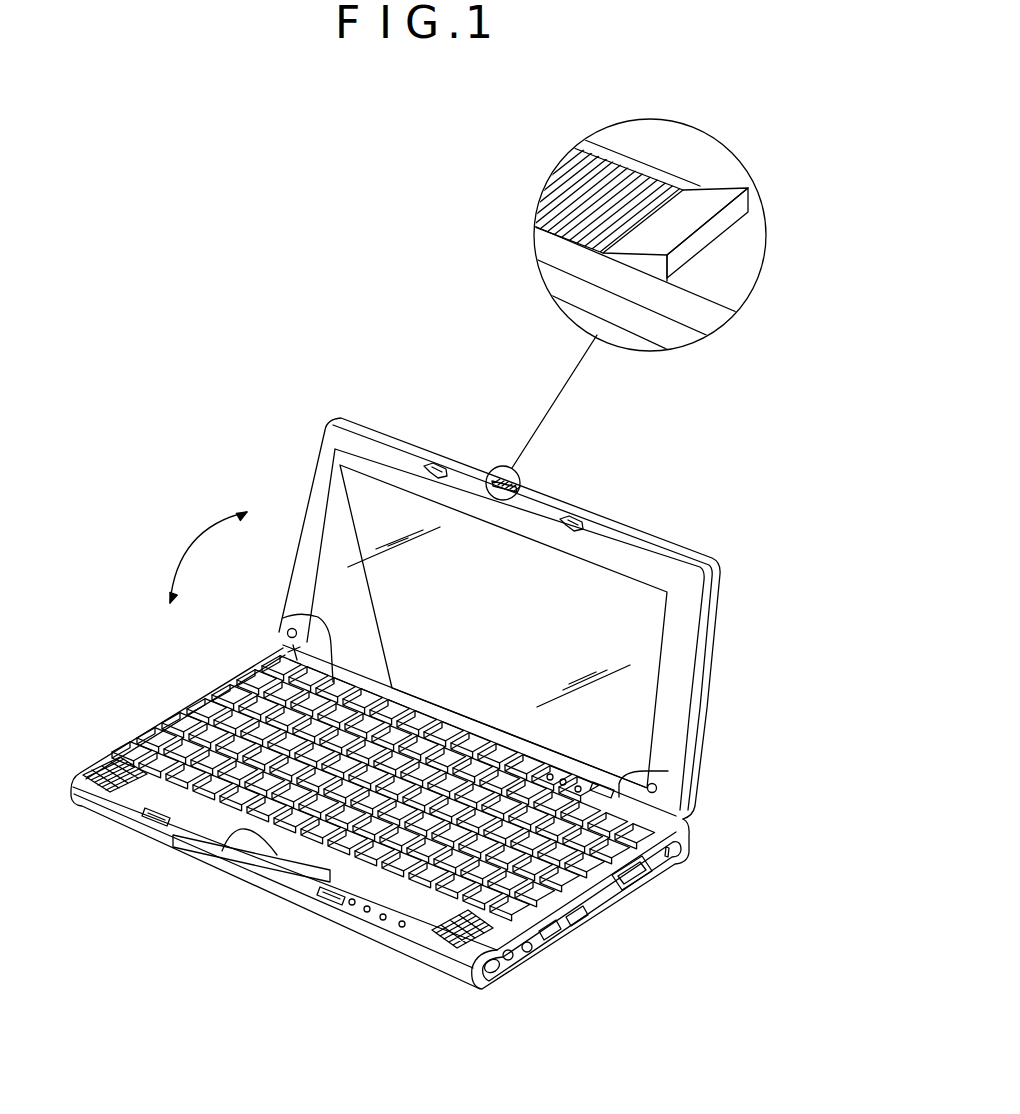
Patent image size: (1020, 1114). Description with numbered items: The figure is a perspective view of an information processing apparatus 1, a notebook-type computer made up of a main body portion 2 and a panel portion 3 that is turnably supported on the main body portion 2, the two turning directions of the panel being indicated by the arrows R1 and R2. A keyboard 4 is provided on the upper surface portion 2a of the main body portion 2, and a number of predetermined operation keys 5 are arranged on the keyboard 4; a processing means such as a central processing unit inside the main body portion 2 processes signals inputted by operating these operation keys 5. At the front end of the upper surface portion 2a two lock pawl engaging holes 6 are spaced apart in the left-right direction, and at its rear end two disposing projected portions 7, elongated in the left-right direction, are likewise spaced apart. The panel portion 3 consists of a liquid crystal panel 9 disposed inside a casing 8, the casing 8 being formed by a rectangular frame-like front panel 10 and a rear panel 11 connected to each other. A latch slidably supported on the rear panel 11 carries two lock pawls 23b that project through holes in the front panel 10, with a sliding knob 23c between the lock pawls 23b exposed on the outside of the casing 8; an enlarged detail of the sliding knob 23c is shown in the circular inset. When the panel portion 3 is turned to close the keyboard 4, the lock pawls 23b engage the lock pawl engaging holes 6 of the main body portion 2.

The information processing apparatus 1 is at (612, 443).
The main body portion 2 is at (450, 951).
The upper surface portion 2a is at (404, 903).
The panel portion 3 is at (687, 667).
The keyboard 4 is at (215, 722).
The operation keys 5 is at (172, 717).
The lock pawl engaging holes 6 is at (147, 820).
The disposing projected portions 7 is at (291, 612).
The casing 8 is at (687, 611).
The liquid crystal panel 9 is at (597, 583).
The front panel 10 is at (682, 718).
The rear panel 11 is at (715, 572).
The lock pawls 23b is at (433, 462).
The sliding knob 23c is at (607, 185).
The closing rotation direction R1 is at (200, 575).
The opening rotation direction R2 is at (267, 503).